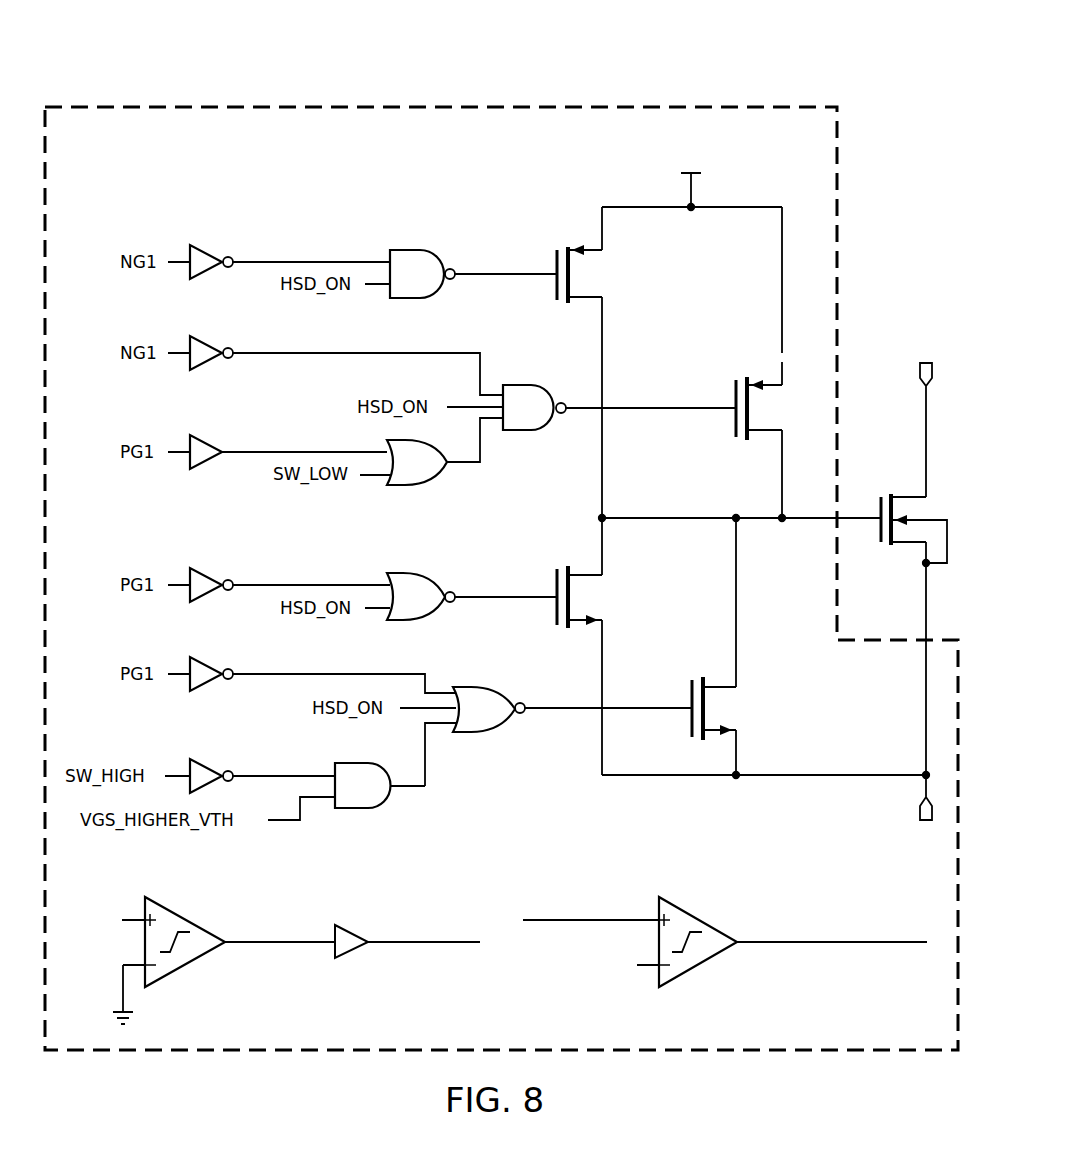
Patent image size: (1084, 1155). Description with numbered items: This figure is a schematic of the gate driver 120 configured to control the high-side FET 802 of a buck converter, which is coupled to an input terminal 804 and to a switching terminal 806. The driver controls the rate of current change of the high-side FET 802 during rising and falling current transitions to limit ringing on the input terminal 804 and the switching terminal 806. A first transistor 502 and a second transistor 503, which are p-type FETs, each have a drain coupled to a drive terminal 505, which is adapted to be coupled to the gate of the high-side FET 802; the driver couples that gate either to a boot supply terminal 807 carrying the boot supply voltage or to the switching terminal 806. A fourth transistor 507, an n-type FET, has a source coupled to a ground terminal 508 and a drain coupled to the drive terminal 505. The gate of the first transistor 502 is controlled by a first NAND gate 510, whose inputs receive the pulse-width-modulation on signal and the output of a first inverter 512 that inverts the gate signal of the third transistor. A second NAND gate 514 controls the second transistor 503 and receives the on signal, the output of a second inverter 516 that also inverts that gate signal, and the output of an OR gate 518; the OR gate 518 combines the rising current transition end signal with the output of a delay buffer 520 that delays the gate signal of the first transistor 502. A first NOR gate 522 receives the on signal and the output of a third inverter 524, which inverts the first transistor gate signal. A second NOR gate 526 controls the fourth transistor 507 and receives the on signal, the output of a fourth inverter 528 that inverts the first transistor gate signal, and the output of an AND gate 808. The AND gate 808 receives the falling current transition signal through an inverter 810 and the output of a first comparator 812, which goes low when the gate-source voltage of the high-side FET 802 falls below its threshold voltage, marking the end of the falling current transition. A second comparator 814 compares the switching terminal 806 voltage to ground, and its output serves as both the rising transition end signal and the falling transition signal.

The gate driver 120 is at (262, 66).
The first inverter 512 is at (215, 252).
The first NAND gate 510 is at (420, 248).
The first transistor 502 is at (553, 285).
The boot supply terminal 807 is at (695, 212).
The second inverter 516 is at (215, 343).
The second NAND gate 514 is at (528, 433).
The second transistor 503 is at (732, 416).
The delay buffer 520 is at (210, 463).
The OR gate 518 is at (430, 487).
The drive terminal 505 is at (738, 524).
The third inverter 524 is at (215, 575).
The first NOR gate 522 is at (425, 622).
The ground terminal 508 is at (553, 608).
The fourth inverter 528 is at (215, 664).
The second NOR gate 526 is at (500, 738).
The fourth transistor 507 is at (688, 722).
The inverter 810 is at (215, 766).
The AND gate 808 is at (362, 810).
The input terminal 804 is at (918, 368).
The high-side FET 802 is at (879, 545).
The switching terminal 806 is at (920, 808).
The second comparator 814 is at (185, 965).
The first comparator 812 is at (700, 965).